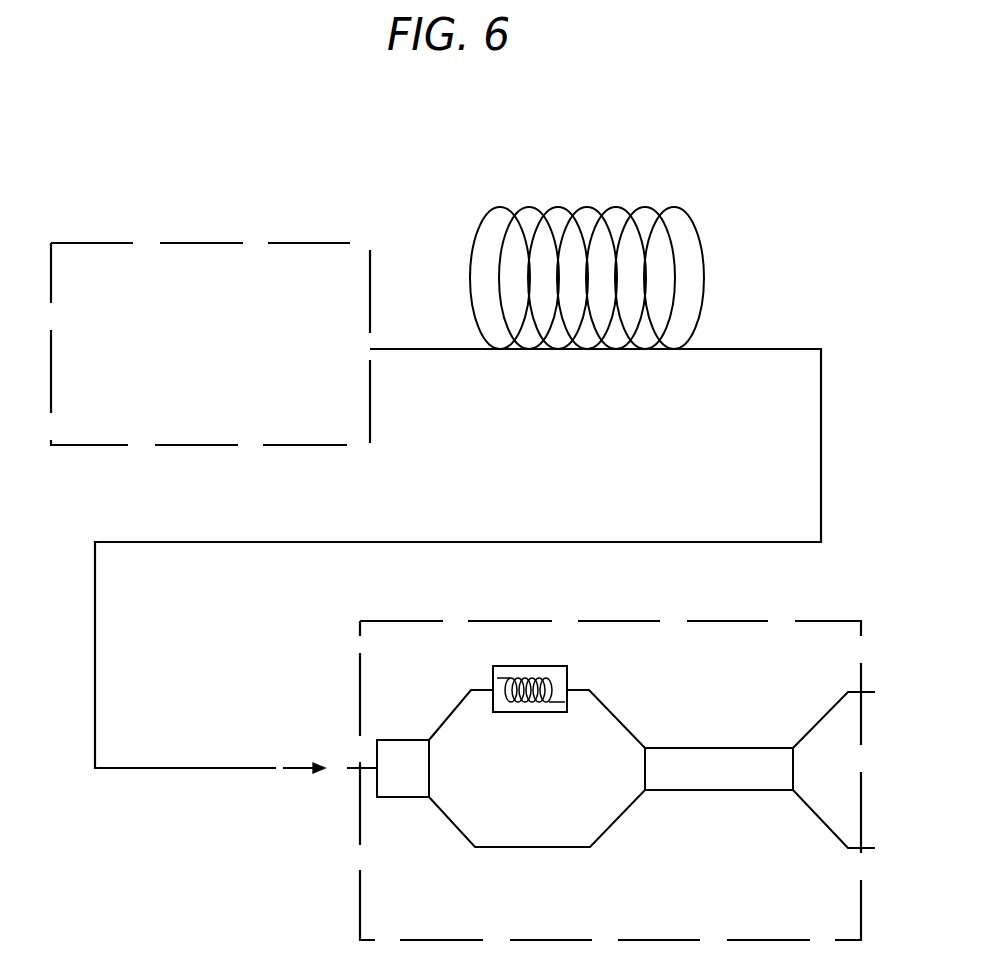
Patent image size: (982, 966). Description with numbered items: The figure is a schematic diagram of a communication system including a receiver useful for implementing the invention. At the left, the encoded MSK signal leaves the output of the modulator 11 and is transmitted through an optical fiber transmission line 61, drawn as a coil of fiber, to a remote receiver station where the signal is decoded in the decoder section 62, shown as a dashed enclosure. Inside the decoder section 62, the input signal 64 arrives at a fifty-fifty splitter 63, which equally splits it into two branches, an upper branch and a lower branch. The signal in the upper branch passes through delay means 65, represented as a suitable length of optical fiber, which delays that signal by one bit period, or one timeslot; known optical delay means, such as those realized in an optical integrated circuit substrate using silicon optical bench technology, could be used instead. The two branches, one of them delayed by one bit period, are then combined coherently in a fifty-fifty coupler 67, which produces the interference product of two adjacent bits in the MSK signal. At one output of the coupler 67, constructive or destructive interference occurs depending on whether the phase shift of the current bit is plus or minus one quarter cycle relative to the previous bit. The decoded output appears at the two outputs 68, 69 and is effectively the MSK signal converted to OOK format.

The modulator 11 is at (206, 243).
The optical fiber transmission line 61 is at (612, 207).
The decoder section 62 is at (360, 677).
The 50-50 splitter 63 is at (412, 797).
The input signal 64 is at (316, 753).
The delay means 65 is at (533, 712).
The 50-50 coupler 67 is at (704, 790).
The output 68 is at (856, 712).
The output 69 is at (856, 828).